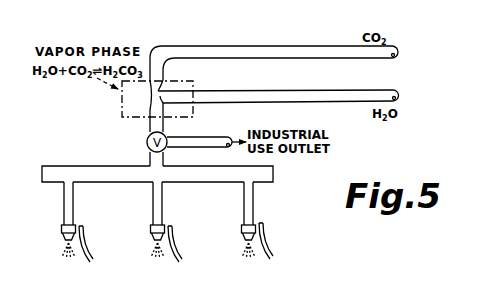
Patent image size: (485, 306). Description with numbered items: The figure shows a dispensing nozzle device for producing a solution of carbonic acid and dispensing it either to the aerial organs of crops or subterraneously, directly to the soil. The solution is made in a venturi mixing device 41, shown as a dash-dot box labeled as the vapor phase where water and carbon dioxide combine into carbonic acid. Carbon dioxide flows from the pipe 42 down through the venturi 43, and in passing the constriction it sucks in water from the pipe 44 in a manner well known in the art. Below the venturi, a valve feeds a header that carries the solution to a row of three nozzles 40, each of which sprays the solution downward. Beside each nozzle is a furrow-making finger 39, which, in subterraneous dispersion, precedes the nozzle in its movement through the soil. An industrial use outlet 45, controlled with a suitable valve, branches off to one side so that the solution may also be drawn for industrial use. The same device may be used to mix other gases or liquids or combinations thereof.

The furrow-making finger 39 is at (92, 262).
The nozzle 40 is at (62, 229).
The venturi mixing device 41 is at (119, 107).
The pipe 42 is at (272, 46).
The venturi 43 is at (147, 108).
The pipe 44 is at (265, 97).
The industrial use outlet 45 is at (192, 144).